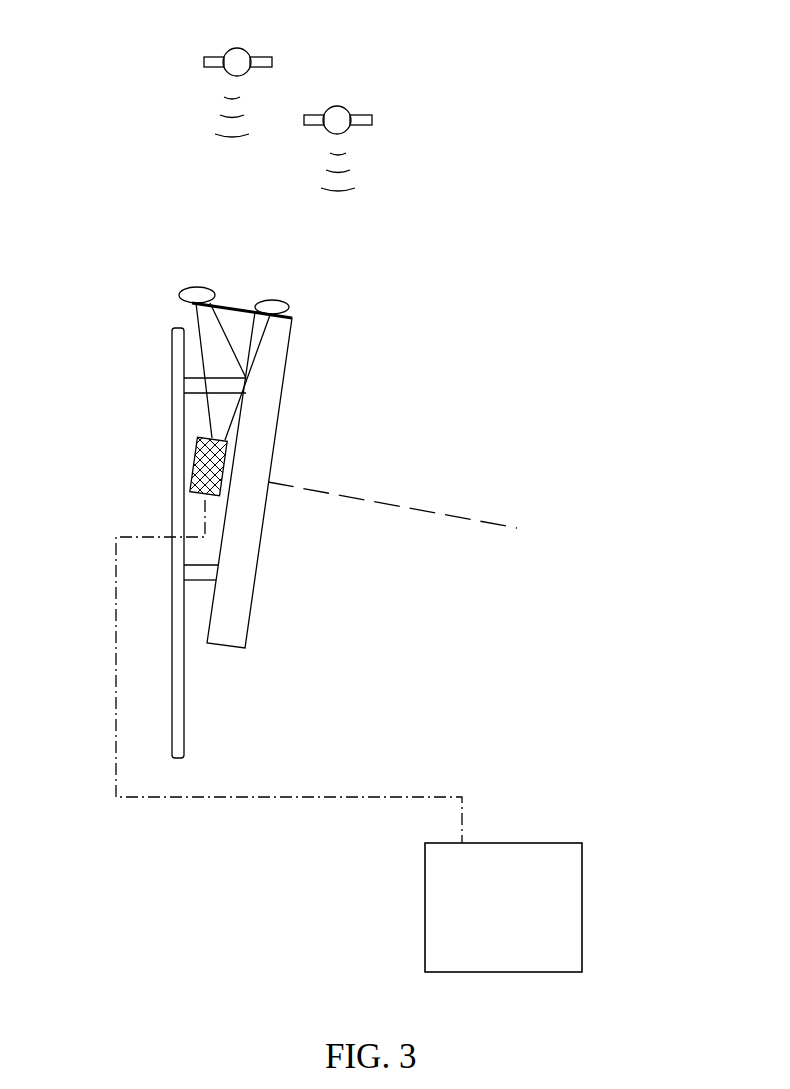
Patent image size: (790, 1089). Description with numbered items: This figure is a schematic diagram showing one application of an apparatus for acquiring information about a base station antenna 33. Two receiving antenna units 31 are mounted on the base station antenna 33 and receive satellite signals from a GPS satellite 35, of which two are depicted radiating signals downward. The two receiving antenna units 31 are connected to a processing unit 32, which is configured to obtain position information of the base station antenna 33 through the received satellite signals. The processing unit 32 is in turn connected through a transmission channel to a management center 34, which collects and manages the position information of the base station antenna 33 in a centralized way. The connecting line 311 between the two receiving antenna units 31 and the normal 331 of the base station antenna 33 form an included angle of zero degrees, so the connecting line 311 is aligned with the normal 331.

The receiving antenna unit 31 is at (259, 270).
The connecting line 311 is at (243, 287).
The processing unit 32 is at (186, 418).
The base station antenna 33 is at (272, 480).
The normal 331 is at (392, 495).
The management center 34 is at (533, 902).
The GPS satellite 35 is at (307, 98).